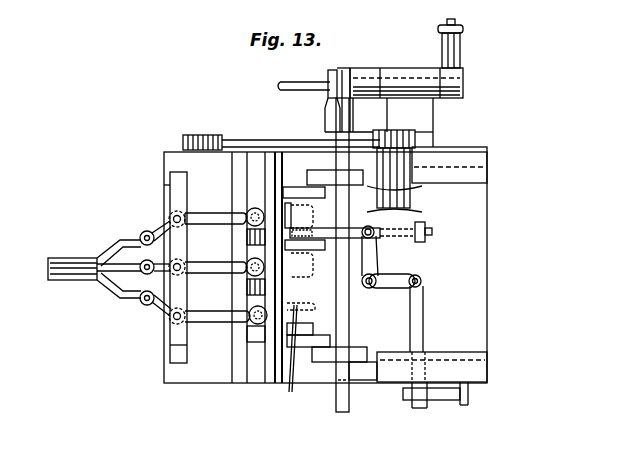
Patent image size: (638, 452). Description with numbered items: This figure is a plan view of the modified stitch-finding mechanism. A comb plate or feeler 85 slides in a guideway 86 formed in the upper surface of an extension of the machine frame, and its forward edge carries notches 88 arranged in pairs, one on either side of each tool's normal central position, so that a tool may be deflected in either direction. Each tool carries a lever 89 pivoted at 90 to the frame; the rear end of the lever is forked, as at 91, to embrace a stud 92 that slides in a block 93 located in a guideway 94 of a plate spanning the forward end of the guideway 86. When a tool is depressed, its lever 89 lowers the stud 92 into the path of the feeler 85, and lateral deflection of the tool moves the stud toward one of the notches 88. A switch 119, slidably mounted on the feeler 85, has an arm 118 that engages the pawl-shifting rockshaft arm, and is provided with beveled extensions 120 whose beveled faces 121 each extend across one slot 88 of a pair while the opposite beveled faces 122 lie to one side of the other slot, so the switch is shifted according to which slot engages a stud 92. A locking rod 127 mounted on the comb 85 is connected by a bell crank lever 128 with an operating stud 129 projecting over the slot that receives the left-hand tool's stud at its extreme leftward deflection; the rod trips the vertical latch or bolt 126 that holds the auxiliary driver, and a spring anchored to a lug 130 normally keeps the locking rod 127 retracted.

The comb plate or feeler 85 is at (488, 214).
The guideway 86 is at (455, 160).
The notches 88 is at (305, 206).
The levers 89 is at (212, 226).
The pivot 90 is at (170, 219).
The forked rear end 91 is at (245, 209).
The studs 92 is at (252, 325).
The blocks 93 is at (250, 206).
The guideway 94 is at (257, 170).
The arm 118 is at (333, 118).
The switch 119 is at (370, 285).
The beveled extensions 120 is at (300, 272).
The beveled faces 121 is at (310, 348).
The beveled faces 122 is at (294, 385).
The latch or bolt 126 is at (442, 402).
The locking rod 127 is at (424, 306).
The bell crank lever 128 is at (400, 276).
The operating stud 129 is at (377, 243).
The lug 130 is at (428, 224).